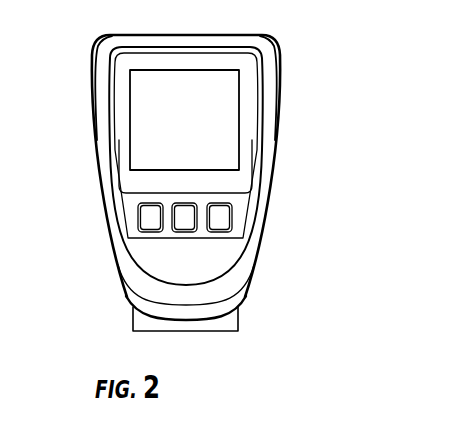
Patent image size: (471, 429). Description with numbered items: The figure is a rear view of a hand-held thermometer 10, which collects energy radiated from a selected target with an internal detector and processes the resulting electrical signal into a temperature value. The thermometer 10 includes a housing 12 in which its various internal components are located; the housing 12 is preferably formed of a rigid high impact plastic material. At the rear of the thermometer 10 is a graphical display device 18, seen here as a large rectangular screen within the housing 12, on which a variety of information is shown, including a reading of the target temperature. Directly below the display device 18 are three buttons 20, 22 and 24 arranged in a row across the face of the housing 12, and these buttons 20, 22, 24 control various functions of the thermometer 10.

The hand-held thermometer 10 is at (348, 75).
The housing 12 is at (255, 262).
The graphical display device 18 is at (223, 117).
The button 20 is at (143, 217).
The button 22 is at (188, 218).
The button 24 is at (226, 214).